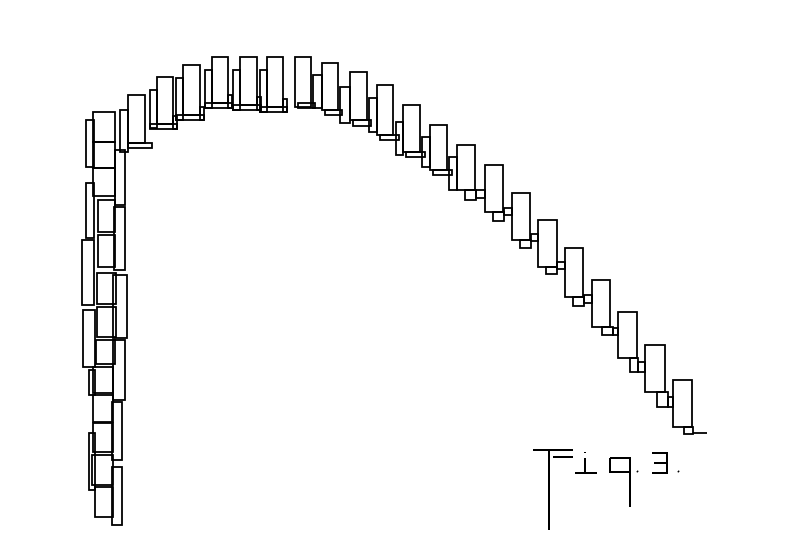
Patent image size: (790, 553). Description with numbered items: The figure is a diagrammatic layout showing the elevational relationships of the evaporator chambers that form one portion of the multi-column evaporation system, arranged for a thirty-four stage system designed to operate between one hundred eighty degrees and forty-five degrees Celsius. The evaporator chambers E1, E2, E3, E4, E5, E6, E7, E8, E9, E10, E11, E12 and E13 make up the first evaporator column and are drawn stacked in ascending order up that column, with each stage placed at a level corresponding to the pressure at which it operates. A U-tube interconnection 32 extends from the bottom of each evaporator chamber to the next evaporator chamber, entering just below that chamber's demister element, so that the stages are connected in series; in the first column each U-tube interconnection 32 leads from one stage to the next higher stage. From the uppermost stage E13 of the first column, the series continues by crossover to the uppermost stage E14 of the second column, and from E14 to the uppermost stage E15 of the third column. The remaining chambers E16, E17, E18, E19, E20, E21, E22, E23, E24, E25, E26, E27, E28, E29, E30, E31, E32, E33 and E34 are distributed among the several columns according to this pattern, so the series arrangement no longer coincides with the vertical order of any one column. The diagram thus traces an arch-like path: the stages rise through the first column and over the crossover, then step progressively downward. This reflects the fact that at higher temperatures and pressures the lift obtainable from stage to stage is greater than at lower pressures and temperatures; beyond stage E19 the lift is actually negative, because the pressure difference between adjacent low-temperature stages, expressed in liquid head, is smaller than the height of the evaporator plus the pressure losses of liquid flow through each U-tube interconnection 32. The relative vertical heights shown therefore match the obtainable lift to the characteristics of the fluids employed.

The evaporator chamber E1 is at (95, 495).
The evaporator chamber E2 is at (92, 470).
The evaporator chamber E3 is at (93, 437).
The evaporator chamber E4 is at (93, 408).
The evaporator chamber E5 is at (93, 380).
The evaporator chamber E6 is at (96, 347).
The evaporator chamber E7 is at (97, 322).
The evaporator chamber E8 is at (97, 287).
The evaporator chamber E9 is at (98, 250).
The evaporator chamber E10 is at (98, 216).
The evaporator chamber E11 is at (93, 187).
The evaporator chamber E12 is at (93, 154).
The evaporator chamber E13 is at (93, 128).
The evaporator chamber E14 is at (135, 95).
The evaporator chamber E15 is at (162, 77).
The evaporator chamber E16 is at (192, 65).
The evaporator chamber E17 is at (218, 57).
The evaporator chamber E18 is at (250, 52).
The evaporator chamber E19 is at (275, 57).
The evaporator chamber E20 is at (302, 57).
The evaporator chamber E21 is at (330, 63).
The evaporator chamber E22 is at (357, 72).
The evaporator chamber E23 is at (385, 85).
The evaporator chamber E24 is at (410, 105).
The evaporator chamber E25 is at (445, 125).
The evaporator chamber E26 is at (472, 145).
The evaporator chamber E27 is at (500, 167).
The evaporator chamber E28 is at (528, 195).
The evaporator chamber E29 is at (555, 221).
The evaporator chamber E30 is at (580, 249).
The evaporator chamber E31 is at (607, 280).
The evaporator chamber E32 is at (637, 314).
The evaporator chamber E33 is at (667, 349).
The evaporator chamber E34 is at (695, 383).
The U-tube interconnection 32 is at (127, 225).